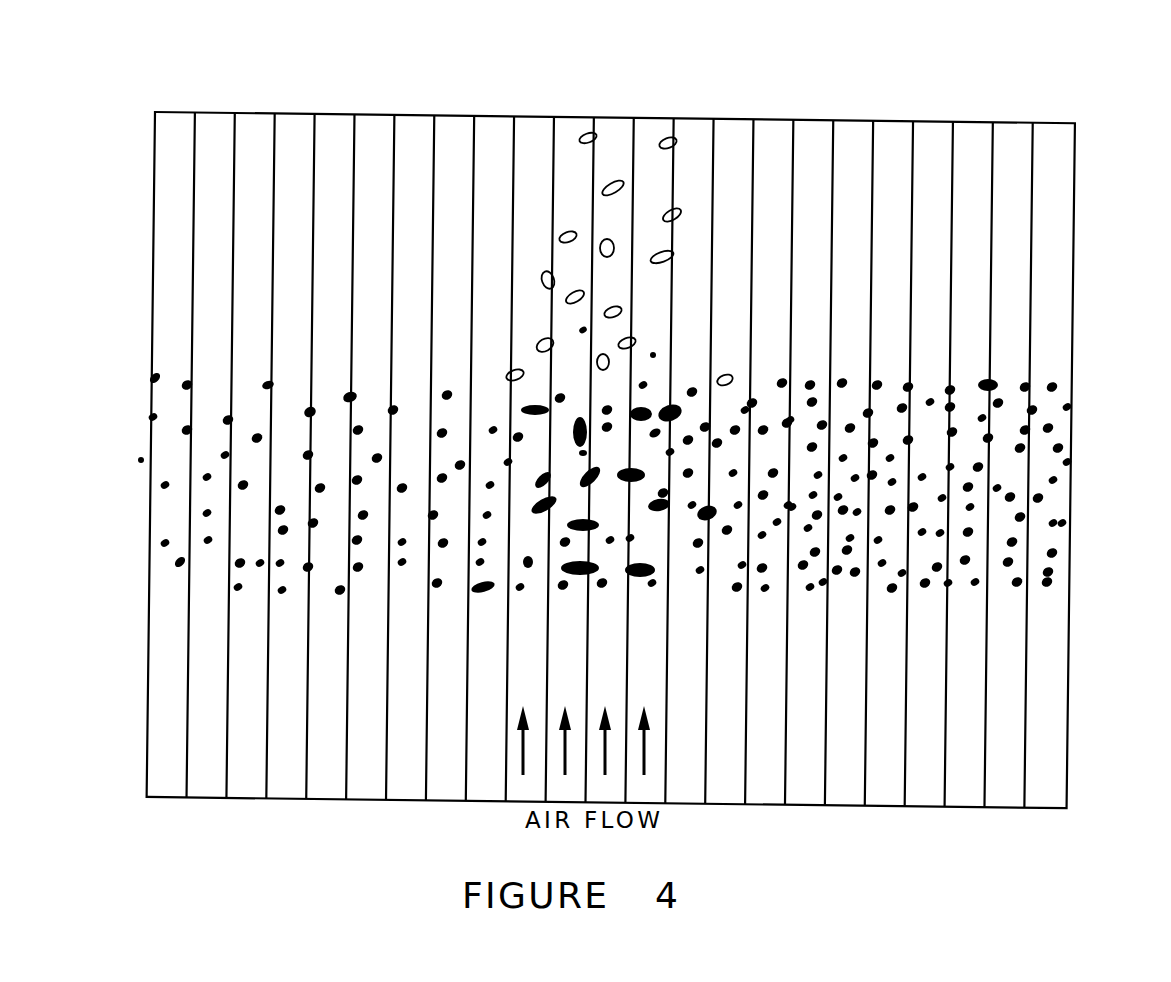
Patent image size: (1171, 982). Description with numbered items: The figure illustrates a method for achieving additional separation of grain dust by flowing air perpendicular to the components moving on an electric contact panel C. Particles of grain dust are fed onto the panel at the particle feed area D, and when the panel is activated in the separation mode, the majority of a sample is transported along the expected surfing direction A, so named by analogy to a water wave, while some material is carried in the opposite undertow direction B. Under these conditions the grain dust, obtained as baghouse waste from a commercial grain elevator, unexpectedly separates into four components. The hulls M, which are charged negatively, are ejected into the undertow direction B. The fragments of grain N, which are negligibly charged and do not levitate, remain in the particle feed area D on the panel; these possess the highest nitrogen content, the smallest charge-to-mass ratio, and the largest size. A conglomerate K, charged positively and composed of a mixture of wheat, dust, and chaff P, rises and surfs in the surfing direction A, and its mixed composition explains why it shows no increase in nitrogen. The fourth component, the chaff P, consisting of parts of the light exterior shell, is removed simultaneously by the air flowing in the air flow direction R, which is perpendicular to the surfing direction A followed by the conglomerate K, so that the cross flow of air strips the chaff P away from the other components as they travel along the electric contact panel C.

The electric contact panel C is at (979, 242).
The air flow direction R is at (596, 42).
The chaff P is at (678, 208).
The fragments of grain N is at (652, 405).
The hulls M is at (173, 562).
The particle feed area D is at (617, 502).
The conglomerate K is at (1022, 383).
The surfing direction A is at (1077, 473).
The undertow direction B is at (143, 460).